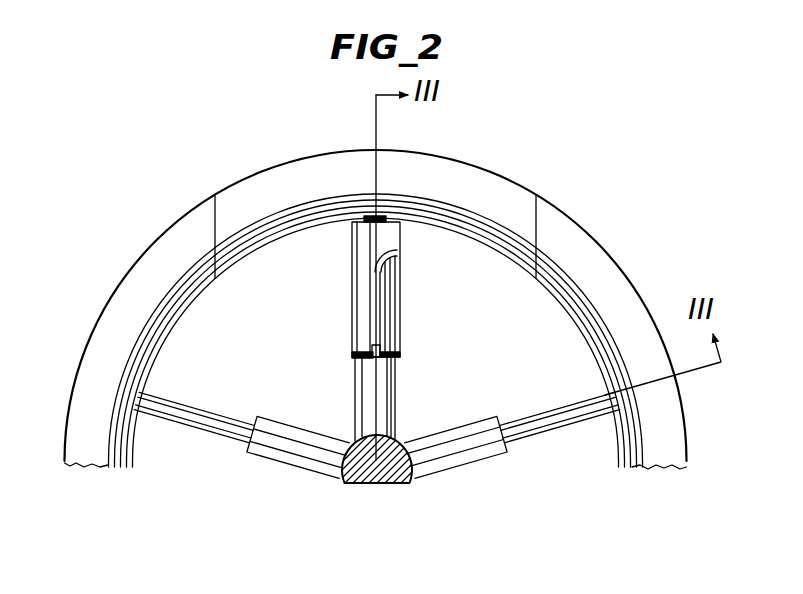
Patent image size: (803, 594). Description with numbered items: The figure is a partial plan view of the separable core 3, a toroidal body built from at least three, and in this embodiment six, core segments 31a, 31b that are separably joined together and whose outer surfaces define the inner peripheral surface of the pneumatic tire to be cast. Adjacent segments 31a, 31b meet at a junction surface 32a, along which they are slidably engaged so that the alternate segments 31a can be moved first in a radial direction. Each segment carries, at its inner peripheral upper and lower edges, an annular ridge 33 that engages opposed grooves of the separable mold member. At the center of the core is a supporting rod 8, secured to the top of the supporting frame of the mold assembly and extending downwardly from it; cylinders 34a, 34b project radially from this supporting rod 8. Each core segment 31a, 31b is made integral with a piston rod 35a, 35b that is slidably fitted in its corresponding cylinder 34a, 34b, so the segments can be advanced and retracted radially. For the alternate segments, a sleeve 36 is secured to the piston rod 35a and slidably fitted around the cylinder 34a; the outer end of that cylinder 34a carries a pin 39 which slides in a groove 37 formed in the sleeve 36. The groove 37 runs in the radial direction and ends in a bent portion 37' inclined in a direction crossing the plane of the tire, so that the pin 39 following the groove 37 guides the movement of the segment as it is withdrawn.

The separable core 3 is at (244, 174).
The core segment 31a is at (498, 192).
The core segment 31b is at (117, 312).
The junction surface 32a is at (537, 222).
The annular ridge 33 is at (635, 472).
The supporting rod 8 is at (390, 485).
The cylinder 34a is at (387, 411).
The cylinder 34b is at (474, 457).
The piston rod 35a is at (358, 237).
The piston rod 35b is at (574, 423).
The sleeve 36 is at (396, 301).
The groove 37 is at (328, 290).
The bent portion 37' is at (416, 263).
The pin 39 is at (397, 353).